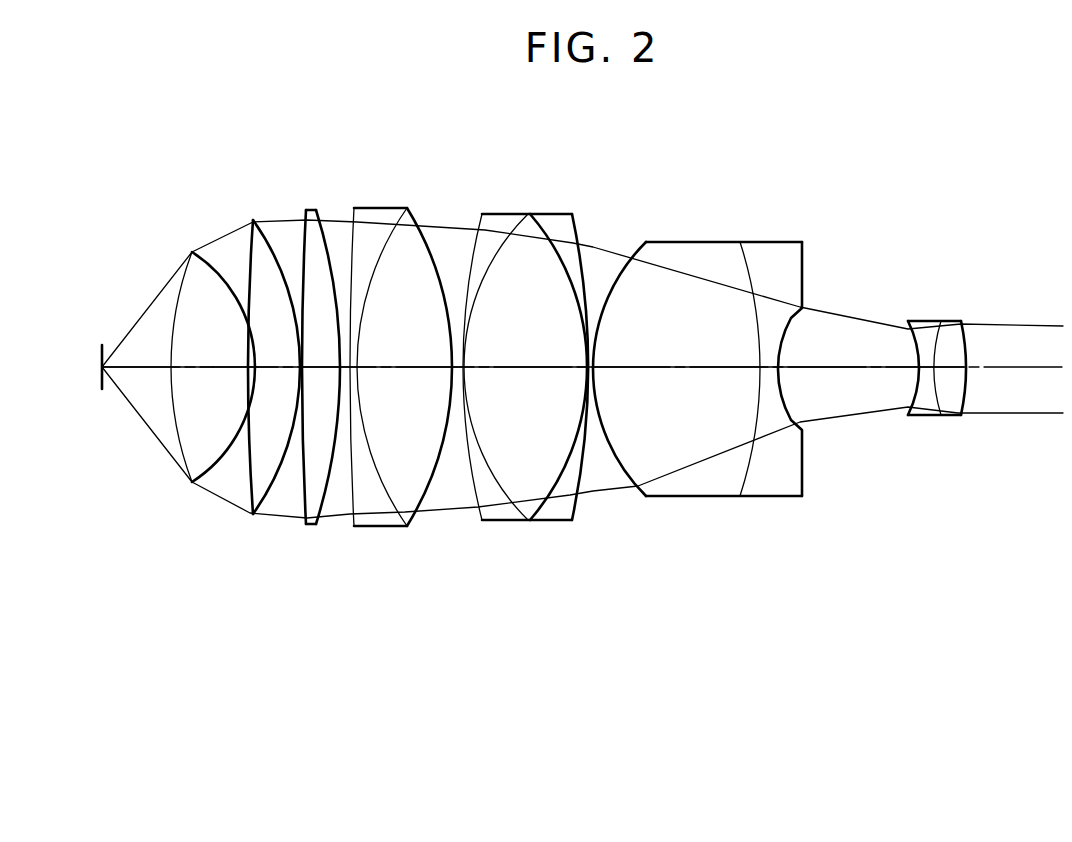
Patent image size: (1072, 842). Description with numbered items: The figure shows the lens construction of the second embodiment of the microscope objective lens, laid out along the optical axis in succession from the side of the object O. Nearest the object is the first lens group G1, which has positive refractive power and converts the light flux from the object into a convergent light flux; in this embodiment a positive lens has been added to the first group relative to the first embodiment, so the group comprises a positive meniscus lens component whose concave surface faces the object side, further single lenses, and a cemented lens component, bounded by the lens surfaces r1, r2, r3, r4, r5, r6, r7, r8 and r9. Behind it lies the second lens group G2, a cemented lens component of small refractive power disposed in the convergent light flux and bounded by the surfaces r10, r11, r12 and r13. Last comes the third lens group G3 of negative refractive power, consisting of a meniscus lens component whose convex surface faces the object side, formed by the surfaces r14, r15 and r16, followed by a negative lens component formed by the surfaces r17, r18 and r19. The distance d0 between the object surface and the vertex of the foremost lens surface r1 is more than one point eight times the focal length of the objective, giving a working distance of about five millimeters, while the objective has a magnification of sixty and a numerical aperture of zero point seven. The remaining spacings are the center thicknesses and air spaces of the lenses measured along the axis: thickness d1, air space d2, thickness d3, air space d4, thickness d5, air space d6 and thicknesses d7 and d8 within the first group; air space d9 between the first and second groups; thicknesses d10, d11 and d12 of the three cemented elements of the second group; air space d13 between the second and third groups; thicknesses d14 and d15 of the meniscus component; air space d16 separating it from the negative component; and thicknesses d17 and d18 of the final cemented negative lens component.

The object O is at (100, 372).
The first lens group G1 is at (433, 200).
The second lens group G2 is at (592, 200).
The third lens group G3 is at (620, 229).
The lens surface r1 is at (195, 456).
The lens surface r2 is at (220, 468).
The lens surface r3 is at (253, 496).
The lens surface r4 is at (267, 495).
The lens surface r5 is at (303, 506).
The lens surface r6 is at (319, 506).
The lens surface r7 is at (350, 508).
The lens surface r8 is at (402, 511).
The lens surface r9 is at (417, 509).
The lens surface r10 is at (476, 513).
The lens surface r11 is at (516, 508).
The lens surface r12 is at (537, 508).
The lens surface r13 is at (576, 511).
The lens surface r14 is at (645, 494).
The lens surface r15 is at (741, 488).
The lens surface r16 is at (796, 408).
The lens surface r17 is at (905, 402).
The lens surface r18 is at (936, 404).
The lens surface r19 is at (967, 402).
The object distance d0 is at (157, 353).
The center thickness d1 is at (234, 353).
The air space d2 is at (254, 369).
The center thickness d3 is at (279, 353).
The air space d4 is at (299, 369).
The center thickness d5 is at (321, 353).
The air space d6 is at (339, 369).
The center thickness d7 is at (353, 369).
The center thickness d8 is at (404, 353).
The air space d9 is at (450, 369).
The center thickness d10 is at (463, 369).
The center thickness d11 is at (525, 353).
The center thickness d12 is at (585, 369).
The air space d13 is at (593, 369).
The center thickness d14 is at (676, 355).
The center thickness d15 is at (766, 369).
The air space d16 is at (848, 354).
The center thickness d17 is at (923, 369).
The center thickness d18 is at (951, 369).